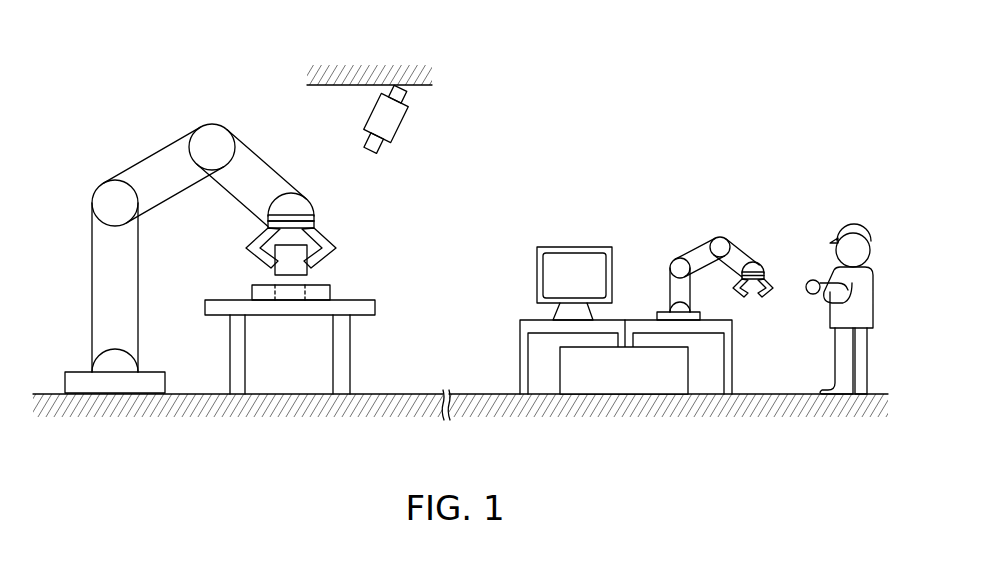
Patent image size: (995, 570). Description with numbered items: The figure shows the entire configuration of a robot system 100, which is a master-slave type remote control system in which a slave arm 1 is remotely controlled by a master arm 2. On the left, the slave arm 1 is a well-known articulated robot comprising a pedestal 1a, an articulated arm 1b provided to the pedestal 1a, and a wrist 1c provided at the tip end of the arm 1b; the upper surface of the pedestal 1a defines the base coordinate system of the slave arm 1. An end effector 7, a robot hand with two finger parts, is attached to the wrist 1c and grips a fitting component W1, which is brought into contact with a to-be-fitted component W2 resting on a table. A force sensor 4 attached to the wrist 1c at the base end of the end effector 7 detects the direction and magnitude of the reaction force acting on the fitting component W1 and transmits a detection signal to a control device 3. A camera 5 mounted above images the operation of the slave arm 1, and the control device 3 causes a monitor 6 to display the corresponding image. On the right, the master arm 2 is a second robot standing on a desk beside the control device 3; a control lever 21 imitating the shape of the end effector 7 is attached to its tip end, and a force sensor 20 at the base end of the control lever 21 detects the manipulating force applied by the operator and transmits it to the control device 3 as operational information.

The robot system 100 is at (460, 232).
The slave arm 1 is at (222, 236).
The pedestal 1a is at (77, 370).
The articulated arm 1b is at (158, 147).
The wrist 1c is at (312, 203).
The force sensor 4 is at (316, 223).
The end effector 7 is at (334, 247).
The fitting component W1 is at (308, 269).
The to-be-fitted component W2 is at (331, 293).
The camera 5 is at (402, 123).
The monitor 6 is at (579, 234).
The master arm 2 is at (734, 239).
The force sensor 20 is at (766, 272).
The control lever 21 is at (772, 277).
The control device 3 is at (689, 372).